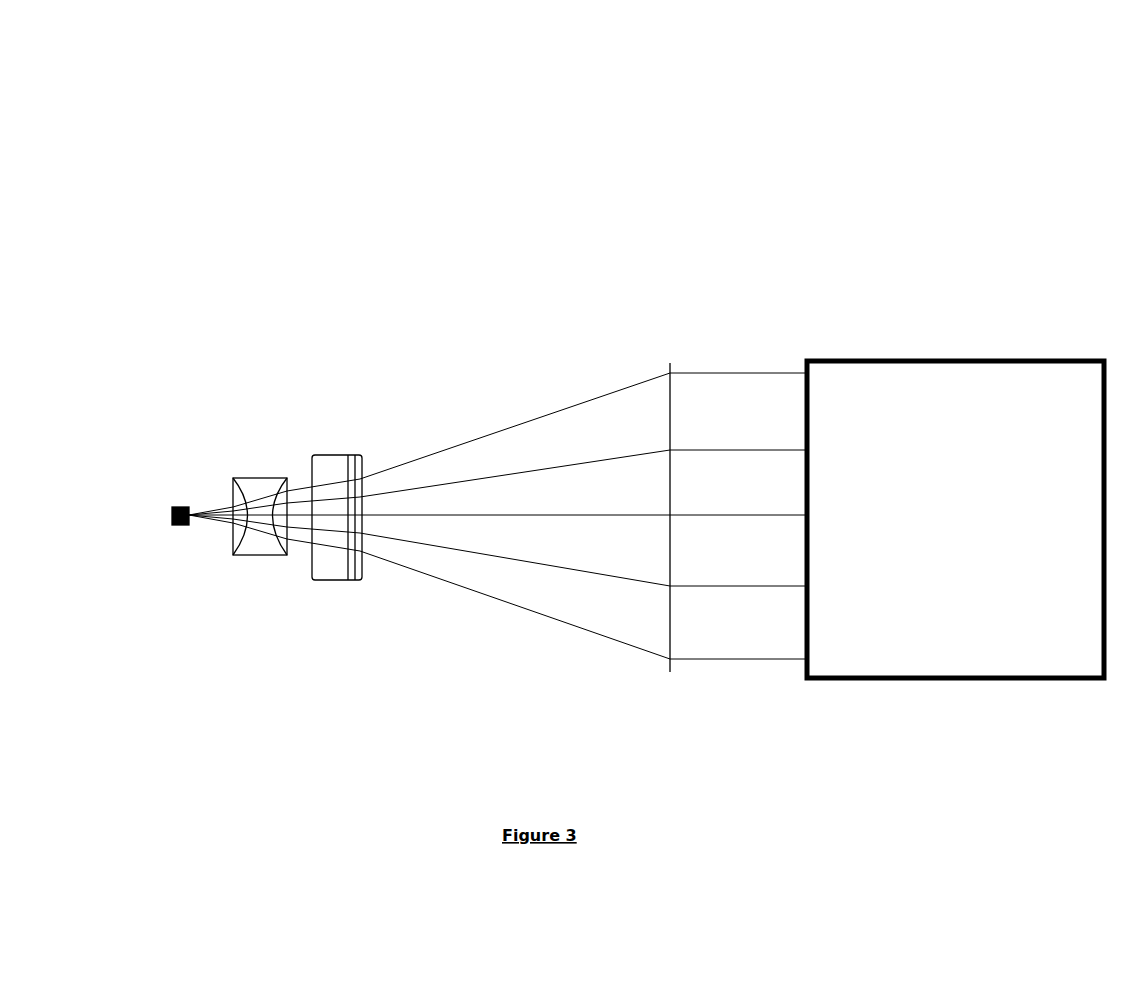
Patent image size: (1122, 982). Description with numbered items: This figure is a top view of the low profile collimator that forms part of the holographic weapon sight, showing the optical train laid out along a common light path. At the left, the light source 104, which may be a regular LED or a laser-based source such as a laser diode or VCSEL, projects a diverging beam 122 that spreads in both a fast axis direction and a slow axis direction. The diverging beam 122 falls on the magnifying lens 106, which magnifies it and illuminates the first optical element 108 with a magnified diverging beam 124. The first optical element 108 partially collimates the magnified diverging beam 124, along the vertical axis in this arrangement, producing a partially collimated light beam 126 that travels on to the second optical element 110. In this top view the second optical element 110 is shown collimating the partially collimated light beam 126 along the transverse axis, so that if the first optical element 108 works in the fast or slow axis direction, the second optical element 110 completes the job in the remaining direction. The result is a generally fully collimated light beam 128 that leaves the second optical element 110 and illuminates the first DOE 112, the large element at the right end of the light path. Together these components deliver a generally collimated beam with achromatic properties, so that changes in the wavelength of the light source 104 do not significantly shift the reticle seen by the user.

The light source 104 is at (160, 538).
The magnifying lens 106 is at (250, 587).
The first optical element 108 is at (334, 612).
The second optical element 110 is at (706, 334).
The first DOE 112 is at (934, 725).
The diverging beam 122 is at (203, 480).
The magnified diverging beam 124 is at (300, 458).
The partially collimated light beam 126 is at (508, 402).
The generally fully collimated light beam 128 is at (769, 351).